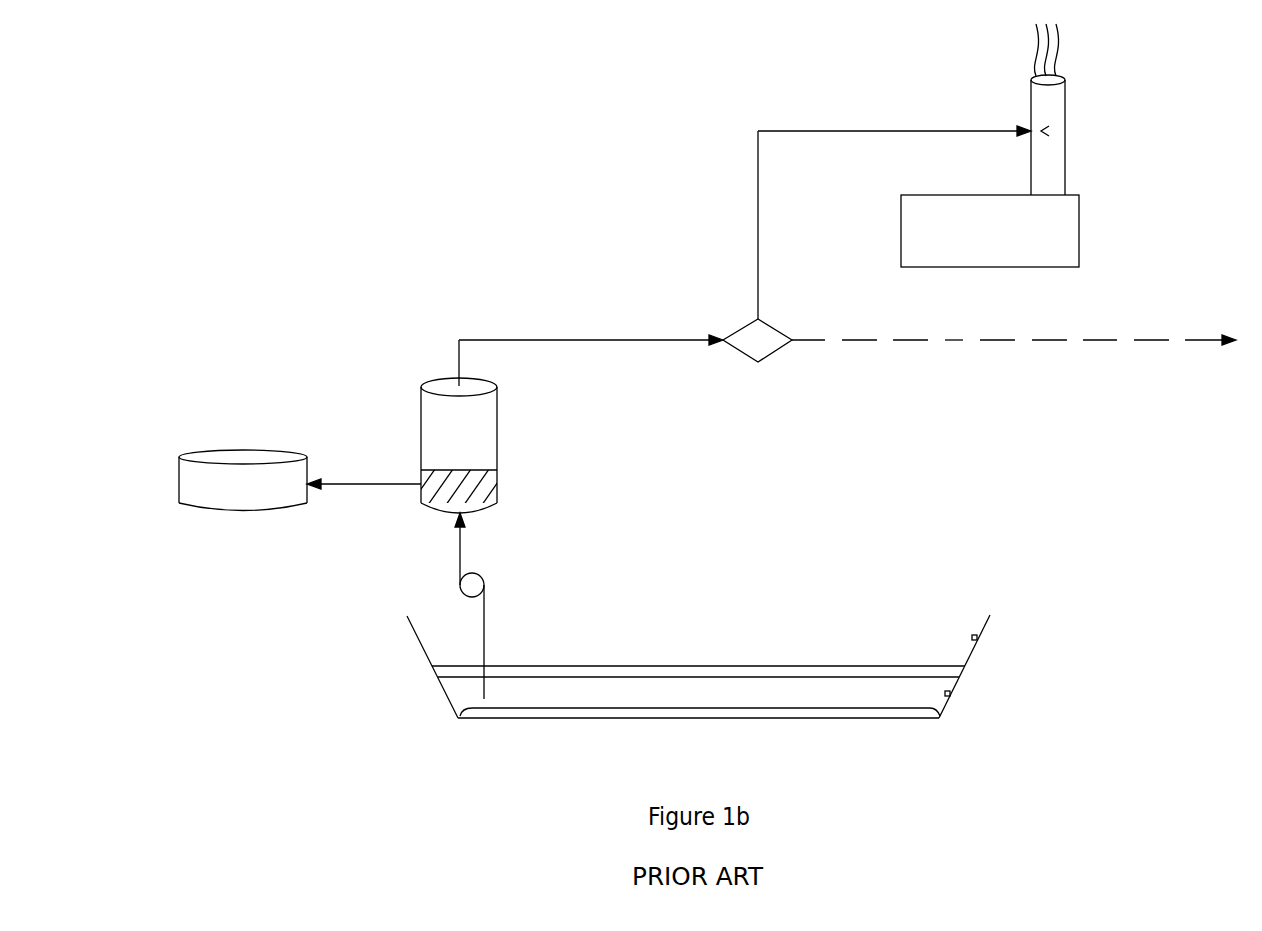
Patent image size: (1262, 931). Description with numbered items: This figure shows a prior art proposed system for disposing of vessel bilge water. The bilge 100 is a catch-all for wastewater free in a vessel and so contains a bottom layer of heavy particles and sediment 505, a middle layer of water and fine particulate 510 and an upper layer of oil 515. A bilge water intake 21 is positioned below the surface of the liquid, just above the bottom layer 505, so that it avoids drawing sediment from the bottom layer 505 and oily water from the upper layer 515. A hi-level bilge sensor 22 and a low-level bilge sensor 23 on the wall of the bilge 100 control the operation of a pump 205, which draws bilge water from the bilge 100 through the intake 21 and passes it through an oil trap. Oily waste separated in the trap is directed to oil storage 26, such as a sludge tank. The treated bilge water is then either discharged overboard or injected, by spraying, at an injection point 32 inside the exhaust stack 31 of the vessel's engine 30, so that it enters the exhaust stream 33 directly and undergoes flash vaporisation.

The bilge water intake 21 is at (473, 698).
The hi-level bilge sensor 22 is at (998, 637).
The low-level bilge sensor 23 is at (961, 704).
The oil storage 26 is at (243, 480).
The engine 30 is at (1090, 229).
The exhaust stack 31 is at (1020, 106).
The injection point 32 is at (1076, 130).
The exhaust stream 33 is at (1066, 53).
The bilge 100 is at (1018, 688).
The pump 205 is at (425, 581).
The bottom layer of heavy particles and sediment 505 is at (823, 712).
The middle layer of water and fine particulate 510 is at (698, 690).
The upper layer of oil 515 is at (842, 672).